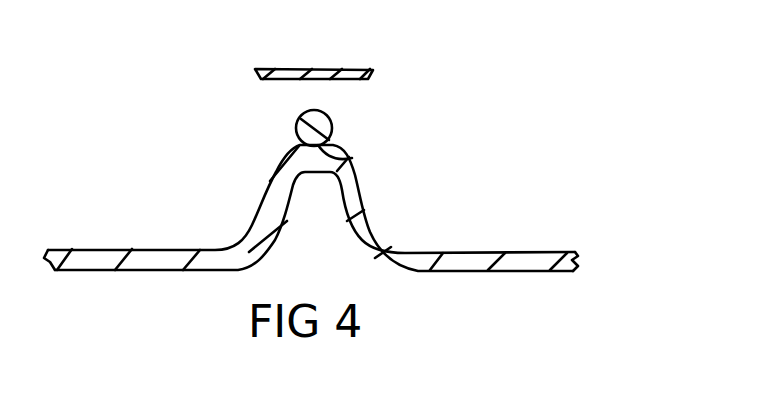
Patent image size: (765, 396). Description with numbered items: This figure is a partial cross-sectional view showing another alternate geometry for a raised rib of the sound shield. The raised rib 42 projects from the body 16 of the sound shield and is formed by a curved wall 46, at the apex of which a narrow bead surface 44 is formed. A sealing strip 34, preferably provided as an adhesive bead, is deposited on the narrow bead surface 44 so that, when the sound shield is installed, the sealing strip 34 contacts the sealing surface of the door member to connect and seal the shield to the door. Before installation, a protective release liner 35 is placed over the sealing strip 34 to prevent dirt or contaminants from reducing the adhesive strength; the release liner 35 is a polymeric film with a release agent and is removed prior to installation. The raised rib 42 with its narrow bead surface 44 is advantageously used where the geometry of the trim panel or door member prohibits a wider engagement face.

The body 16 is at (543, 253).
The sealing strip 34 is at (330, 118).
The protective release liner 35 is at (373, 70).
The raised rib 42 is at (232, 204).
The narrow bead surface 44 is at (352, 158).
The curved wall 46 is at (363, 228).